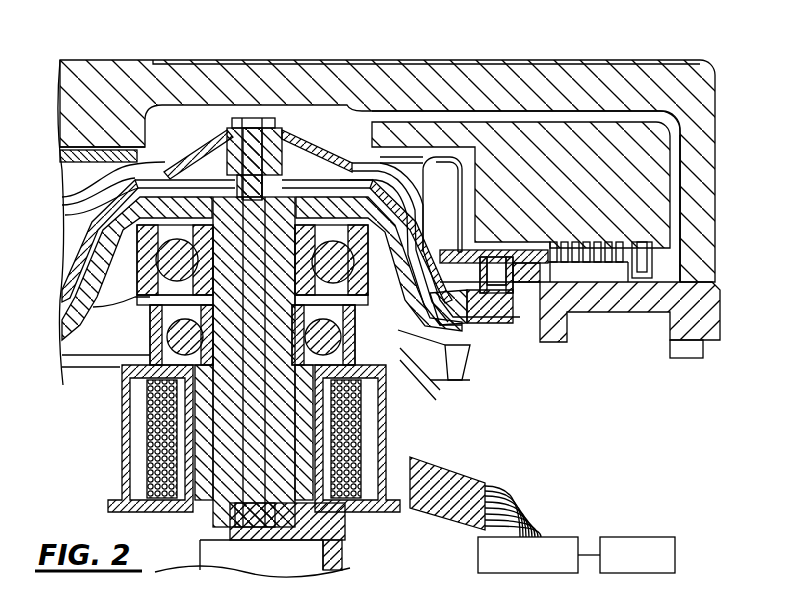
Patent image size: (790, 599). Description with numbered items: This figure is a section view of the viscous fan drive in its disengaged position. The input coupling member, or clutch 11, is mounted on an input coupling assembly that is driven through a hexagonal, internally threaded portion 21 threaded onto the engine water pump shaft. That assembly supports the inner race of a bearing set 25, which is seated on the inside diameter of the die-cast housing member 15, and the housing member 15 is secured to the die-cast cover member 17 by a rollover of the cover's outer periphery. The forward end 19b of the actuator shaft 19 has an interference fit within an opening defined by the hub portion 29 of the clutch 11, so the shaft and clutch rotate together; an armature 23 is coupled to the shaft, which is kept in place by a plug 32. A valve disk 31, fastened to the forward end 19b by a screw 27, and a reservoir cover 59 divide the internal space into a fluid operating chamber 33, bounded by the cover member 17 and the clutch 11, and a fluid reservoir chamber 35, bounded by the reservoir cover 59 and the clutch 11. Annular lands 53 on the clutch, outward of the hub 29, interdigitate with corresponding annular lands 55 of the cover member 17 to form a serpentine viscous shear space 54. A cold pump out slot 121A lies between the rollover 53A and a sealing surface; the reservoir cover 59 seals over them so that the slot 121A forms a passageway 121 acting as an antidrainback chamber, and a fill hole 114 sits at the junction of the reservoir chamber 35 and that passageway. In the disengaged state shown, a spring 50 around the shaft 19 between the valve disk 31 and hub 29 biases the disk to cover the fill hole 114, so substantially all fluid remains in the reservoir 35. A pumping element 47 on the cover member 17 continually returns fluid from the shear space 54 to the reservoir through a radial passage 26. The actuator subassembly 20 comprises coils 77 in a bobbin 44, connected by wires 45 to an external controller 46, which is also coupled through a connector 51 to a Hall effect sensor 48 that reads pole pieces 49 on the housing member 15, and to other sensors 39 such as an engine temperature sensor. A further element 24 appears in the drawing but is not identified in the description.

The cover member 17 is at (71, 80).
The radial passage 26 is at (697, 177).
The valve disk 31 is at (165, 175).
The screw 27 is at (240, 118).
The forward end of the actuator shaft 19b is at (255, 195).
The hub portion 29 is at (318, 197).
The fluid reservoir chamber 35 is at (74, 222).
The spring 50 is at (83, 177).
The bobbin 44 is at (147, 390).
The actuator shaft 19 is at (300, 412).
The armature 23 is at (330, 448).
The actuator subassembly 20 is at (120, 425).
The coils 77 is at (147, 457).
The plug 32 is at (283, 517).
The internally threaded portion 21 is at (342, 556).
The connector 51 is at (453, 520).
The wires 45 is at (522, 495).
The external controller 46 is at (478, 556).
The sensors 39 is at (676, 556).
The rollover 53A is at (600, 250).
The annular lands of the cover member 55 is at (638, 248).
The annular lands of the input coupling member 53 is at (633, 285).
The viscous shear space 54 is at (600, 283).
The lead 24 is at (618, 285).
The fluid operating chamber 33 is at (585, 283).
The input coupling member 11 is at (552, 300).
The reservoir cover 59 is at (448, 200).
The fill hole 114 is at (445, 255).
The housing member 15 is at (465, 348).
The passageway 121 is at (520, 257).
The cold pump out slot 121A is at (503, 257).
The pumping element 47 is at (690, 277).
The bearing set 25 is at (437, 378).
The pole pieces 49 is at (467, 380).
The Hall effect sensor 48 is at (440, 405).